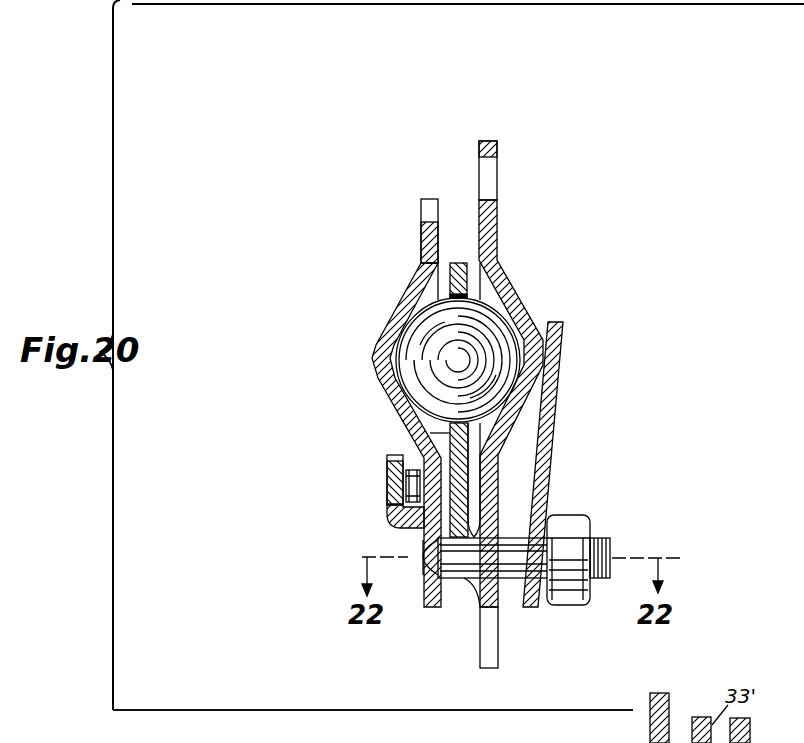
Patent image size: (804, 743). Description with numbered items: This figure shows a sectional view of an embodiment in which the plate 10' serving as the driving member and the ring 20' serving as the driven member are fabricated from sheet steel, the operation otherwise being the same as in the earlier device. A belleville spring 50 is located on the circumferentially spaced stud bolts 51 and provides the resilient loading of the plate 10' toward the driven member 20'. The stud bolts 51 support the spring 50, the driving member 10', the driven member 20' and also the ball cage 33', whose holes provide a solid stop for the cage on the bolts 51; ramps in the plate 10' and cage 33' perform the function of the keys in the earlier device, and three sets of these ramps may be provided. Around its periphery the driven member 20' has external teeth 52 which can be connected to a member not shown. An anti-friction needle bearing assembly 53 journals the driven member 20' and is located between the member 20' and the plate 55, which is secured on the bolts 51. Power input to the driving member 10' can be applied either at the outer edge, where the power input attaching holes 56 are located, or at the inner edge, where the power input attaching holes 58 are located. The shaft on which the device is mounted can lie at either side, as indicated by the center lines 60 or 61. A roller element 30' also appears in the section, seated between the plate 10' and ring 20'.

The plate 10' is at (525, 403).
The ring 20' is at (388, 435).
The roller 30' is at (437, 345).
The ball cage 33' is at (458, 435).
The belleville spring 50 is at (566, 328).
The stud bolts 51 is at (600, 540).
The external teeth 52 is at (422, 209).
The anti-friction needle bearing assembly 53 is at (407, 480).
The plate 55 is at (393, 508).
The power input attaching holes 56 is at (493, 158).
The power input attaching holes 58 is at (499, 655).
The center line 60 is at (612, 5).
The center line 61 is at (318, 710).